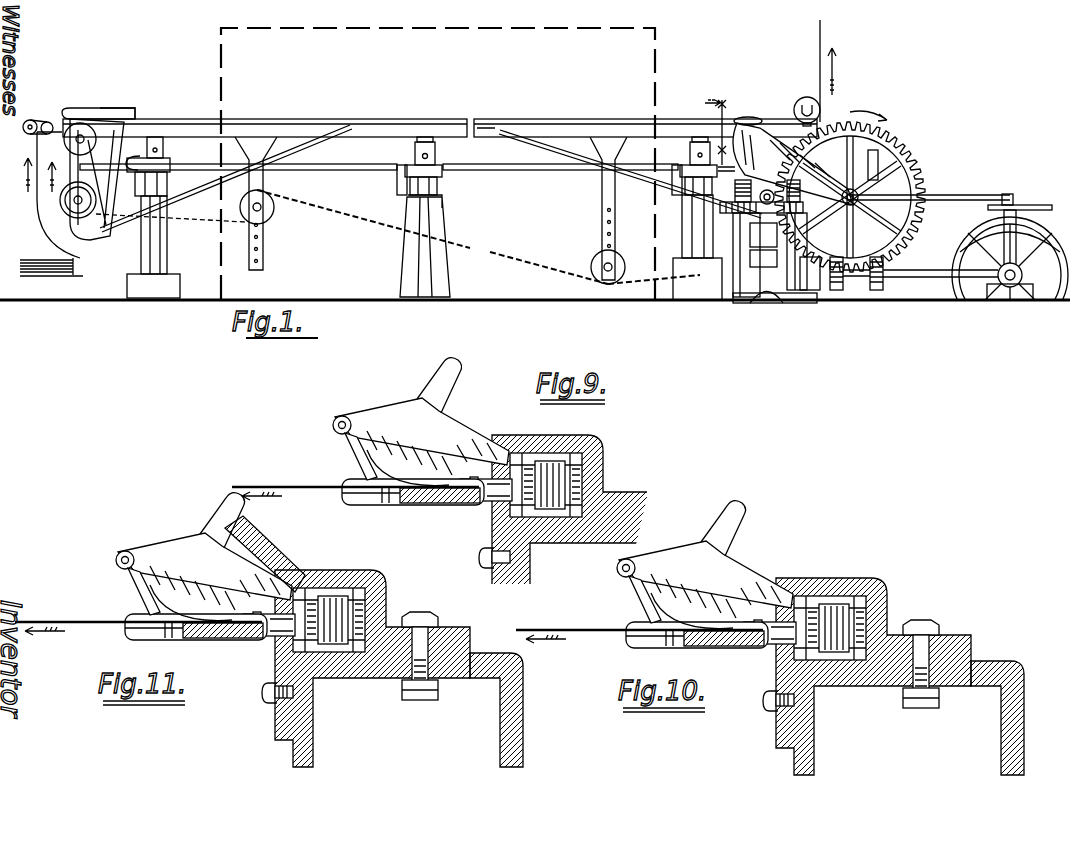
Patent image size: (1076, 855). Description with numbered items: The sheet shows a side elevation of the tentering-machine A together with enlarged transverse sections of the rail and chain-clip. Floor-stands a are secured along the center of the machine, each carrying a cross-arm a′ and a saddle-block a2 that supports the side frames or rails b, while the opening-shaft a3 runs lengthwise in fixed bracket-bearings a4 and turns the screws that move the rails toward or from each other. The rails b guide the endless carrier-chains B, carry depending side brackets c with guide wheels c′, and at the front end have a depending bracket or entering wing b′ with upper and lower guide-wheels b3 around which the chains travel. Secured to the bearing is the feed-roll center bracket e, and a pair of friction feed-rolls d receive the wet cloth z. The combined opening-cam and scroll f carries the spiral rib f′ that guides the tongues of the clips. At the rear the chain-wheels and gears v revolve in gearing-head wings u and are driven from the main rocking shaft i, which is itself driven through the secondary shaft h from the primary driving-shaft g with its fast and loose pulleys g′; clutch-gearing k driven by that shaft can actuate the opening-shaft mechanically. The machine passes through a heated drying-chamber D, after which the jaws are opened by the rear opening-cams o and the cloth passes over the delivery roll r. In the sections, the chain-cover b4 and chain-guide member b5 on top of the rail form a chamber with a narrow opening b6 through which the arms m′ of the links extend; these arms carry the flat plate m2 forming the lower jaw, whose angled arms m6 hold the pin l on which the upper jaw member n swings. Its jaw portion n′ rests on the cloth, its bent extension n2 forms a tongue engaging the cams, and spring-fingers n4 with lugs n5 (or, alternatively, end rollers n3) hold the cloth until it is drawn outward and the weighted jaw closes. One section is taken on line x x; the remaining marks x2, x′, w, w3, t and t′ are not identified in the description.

In FIG. 1, the drying-chamber D is at (490, 58).
In FIG. 1, the side frames or rails b is at (584, 121).
In FIG. 11, the side frames or rails b is at (513, 719).
In FIG. 10, the side frames or rails b is at (966, 697).
In FIG. 9, the side frames or rails b is at (646, 575).
In FIG. 1, the chain-cover b4 is at (528, 118).
In FIG. 11, the chain-cover b4 is at (345, 572).
In FIG. 10, the chain-cover b4 is at (873, 663).
In FIG. 9, the chain-cover b4 is at (589, 529).
In FIG. 1, the cam-piece (combined opening-cam and scroll) f is at (100, 110).
In FIG. 1, the spiral or scroll-shaped rib member f′ is at (126, 108).
In FIG. 1, the friction feed-rolls d is at (32, 119).
In FIG. 1, the wet cloth or goods z is at (35, 204).
In FIG. 11, the wet cloth or goods z is at (100, 621).
In FIG. 10, the wet cloth or goods z is at (588, 618).
In FIG. 9, the wet cloth or goods z is at (304, 475).
In FIG. 1, the depending bracket or entering wing b′ is at (92, 242).
In FIG. 1, the upper and lower guide-wheels b3 is at (66, 212).
In FIG. 1, the feed-roll center bracket e is at (141, 152).
In FIG. 1, the opening-shaft a3 is at (216, 164).
In FIG. 1, the saddle-block a2 is at (655, 170).
In FIG. 1, the floor-stands a is at (160, 252).
In FIG. 1, the bracket-bearings a4 is at (397, 184).
In FIG. 1, the cross-arm a′ is at (437, 184).
In FIG. 1, the adjusting screw x2 is at (438, 150).
In FIG. 1, the depending side brackets c is at (263, 238).
In FIG. 1, the carrier or guide wheels c′ is at (626, 262).
In FIG. 1, the carrier-chains B is at (572, 267).
In FIG. 11, the carrier-chains B is at (352, 622).
In FIG. 10, the carrier-chains B is at (853, 626).
In FIG. 9, the carrier-chains B is at (572, 485).
In FIG. 1, the tentering-machine A is at (511, 206).
In FIG. 1, the gearing-head wings u is at (793, 210).
In FIG. 1, the main rocking shaft i is at (756, 186).
In FIG. 1, the worm w is at (761, 209).
In FIG. 1, the base w3 is at (790, 299).
In FIG. 1, the combined chain-wheels and gears v is at (905, 150).
In FIG. 1, the slide x′ is at (879, 164).
In FIG. 1, the stripping or delivery roll r is at (795, 103).
In FIG. 1, the rear opening-cams o is at (716, 118).
In FIG. 11, the rear opening-cams o is at (245, 533).
In FIG. 1, the mark x is at (725, 157).
In FIG. 1, the shaft t′ is at (960, 195).
In FIG. 1, the bar t is at (1044, 206).
In FIG. 1, the primary driving-shaft g is at (1010, 275).
In FIG. 1, the fast and loose pulleys g′ is at (985, 238).
In FIG. 1, the clutch-gearing k is at (875, 283).
In FIG. 1, the secondary shaft h is at (898, 279).
In FIG. 11, the chain-guide member b5 is at (274, 669).
In FIG. 10, the chain-guide member b5 is at (765, 684).
In FIG. 9, the chain-guide member b5 is at (477, 564).
In FIG. 11, the narrow opening b6 is at (272, 613).
In FIG. 10, the narrow opening b6 is at (770, 617).
In FIG. 9, the narrow opening b6 is at (486, 503).
In FIG. 11, the lateral arms or brackets m′ is at (200, 640).
In FIG. 10, the lateral arms or brackets m′ is at (697, 646).
In FIG. 9, the lateral arms or brackets m′ is at (415, 486).
In FIG. 10, the lug n5 is at (657, 650).
In FIG. 9, the lug n5 is at (378, 508).
In FIG. 11, the end rollers n3 is at (156, 639).
In FIG. 11, the flat plate m2 is at (124, 632).
In FIG. 10, the flat plate m2 is at (639, 647).
In FIG. 9, the flat plate m2 is at (355, 504).
In FIG. 11, the arms m6 is at (206, 588).
In FIG. 10, the arms m6 is at (706, 579).
In FIG. 9, the arms m6 is at (422, 436).
In FIG. 11, the upwardly-bent extension n2 is at (230, 504).
In FIG. 10, the upwardly-bent extension n2 is at (723, 523).
In FIG. 9, the upwardly-bent extension n2 is at (439, 380).
In FIG. 11, the upper or independently-movable jaw member n is at (176, 548).
In FIG. 9, the upper or independently-movable jaw member n is at (378, 397).
In FIG. 11, the pin l is at (118, 559).
In FIG. 10, the pin l is at (615, 565).
In FIG. 9, the pin l is at (331, 422).
In FIG. 11, the jaw portion proper n′ is at (148, 604).
In FIG. 10, the jaw portion proper n′ is at (634, 599).
In FIG. 9, the jaw portion proper n′ is at (350, 456).
In FIG. 11, the spring-fingers n4 is at (180, 617).
In FIG. 10, the spring-fingers n4 is at (692, 604).
In FIG. 9, the spring-fingers n4 is at (408, 461).